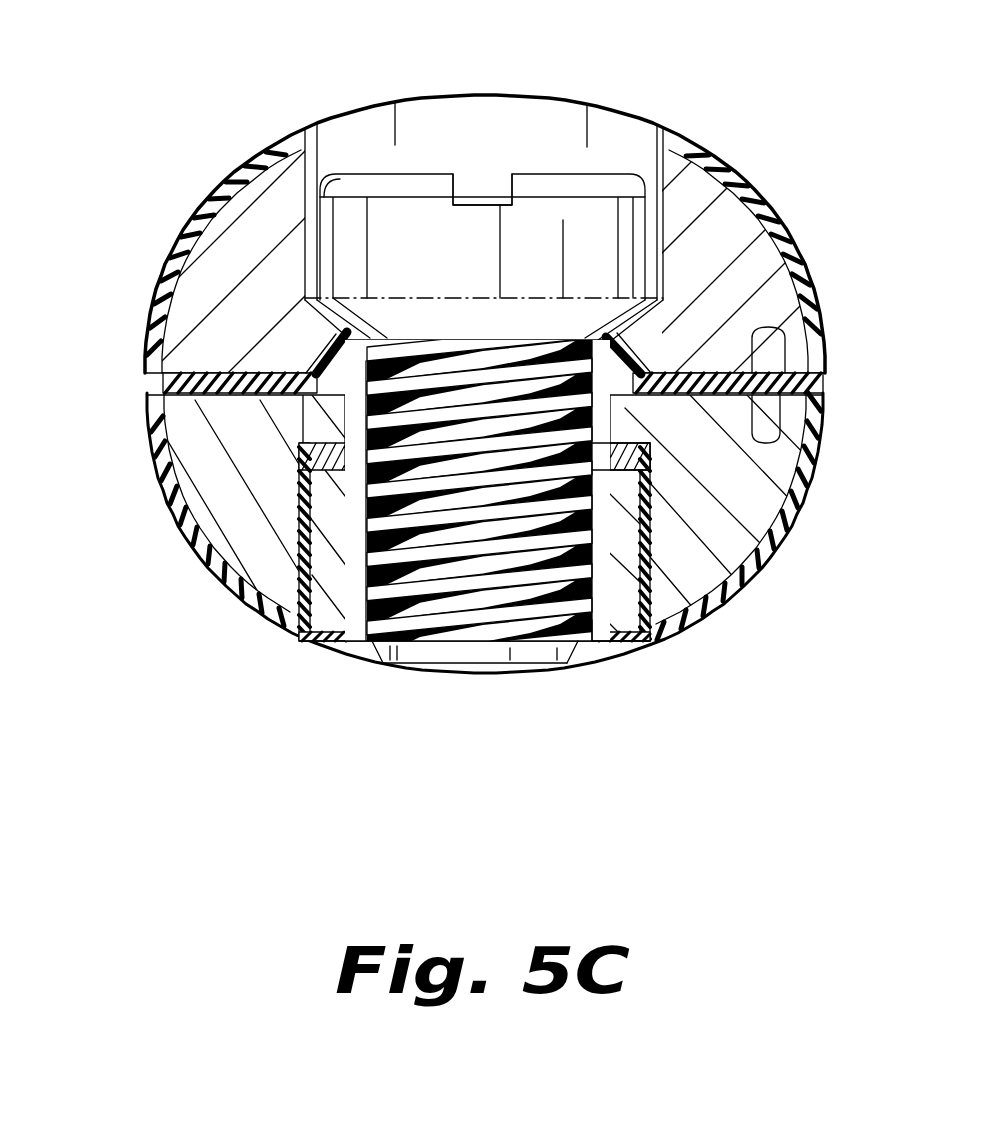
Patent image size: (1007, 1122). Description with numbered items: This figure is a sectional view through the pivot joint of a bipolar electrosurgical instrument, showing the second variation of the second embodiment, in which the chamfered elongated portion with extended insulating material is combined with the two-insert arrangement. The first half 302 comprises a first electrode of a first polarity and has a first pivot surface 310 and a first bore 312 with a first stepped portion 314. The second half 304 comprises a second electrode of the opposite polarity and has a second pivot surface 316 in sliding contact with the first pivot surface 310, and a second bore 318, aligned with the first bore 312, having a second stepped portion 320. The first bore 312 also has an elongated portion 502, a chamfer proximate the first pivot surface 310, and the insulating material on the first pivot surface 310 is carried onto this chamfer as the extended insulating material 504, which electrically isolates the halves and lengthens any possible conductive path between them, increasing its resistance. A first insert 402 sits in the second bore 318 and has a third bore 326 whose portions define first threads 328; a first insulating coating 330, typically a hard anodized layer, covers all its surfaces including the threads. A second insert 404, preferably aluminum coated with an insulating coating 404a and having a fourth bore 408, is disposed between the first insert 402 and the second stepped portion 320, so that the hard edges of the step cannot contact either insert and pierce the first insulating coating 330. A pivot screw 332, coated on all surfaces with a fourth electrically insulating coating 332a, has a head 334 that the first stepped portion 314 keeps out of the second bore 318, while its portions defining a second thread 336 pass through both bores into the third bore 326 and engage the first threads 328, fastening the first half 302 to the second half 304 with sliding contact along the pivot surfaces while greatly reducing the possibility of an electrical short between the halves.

The first half 302 is at (158, 115).
The second half 304 is at (180, 694).
The first pivot surface 310 is at (765, 373).
The first bore 312 is at (333, 152).
The first stepped portion 314 is at (333, 297).
The second pivot surface 316 is at (790, 445).
The second bore 318 is at (373, 683).
The second stepped portion 320 is at (300, 436).
The third bore 326 is at (428, 615).
The first threads 328 is at (567, 638).
The first insulating coating 330 is at (607, 640).
The pivot screw 332 is at (543, 125).
The fourth electrically insulating coating 332a is at (472, 348).
The head 334 is at (423, 215).
The second thread 336 is at (494, 575).
The first insert 402 is at (622, 575).
The second insert 404 is at (297, 463).
The insulating coating 404a is at (650, 485).
The fourth bore 408 is at (357, 480).
The elongated portion 502 is at (640, 350).
The extended insulating material 504 is at (200, 385).